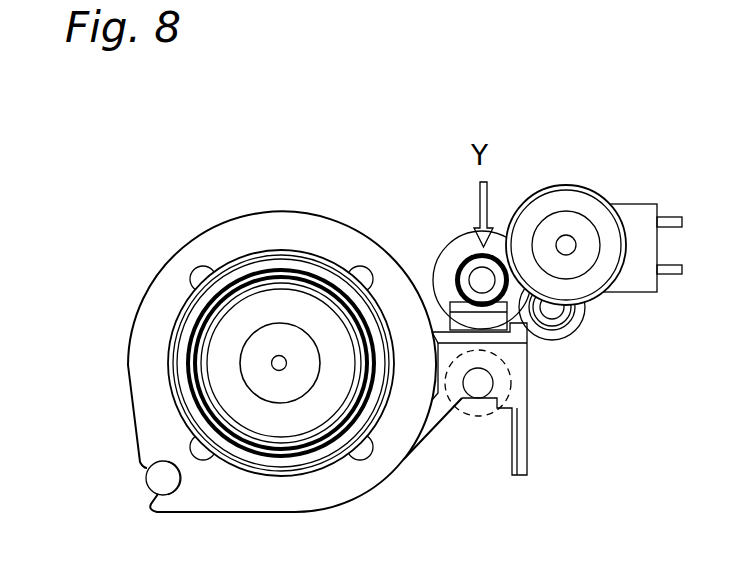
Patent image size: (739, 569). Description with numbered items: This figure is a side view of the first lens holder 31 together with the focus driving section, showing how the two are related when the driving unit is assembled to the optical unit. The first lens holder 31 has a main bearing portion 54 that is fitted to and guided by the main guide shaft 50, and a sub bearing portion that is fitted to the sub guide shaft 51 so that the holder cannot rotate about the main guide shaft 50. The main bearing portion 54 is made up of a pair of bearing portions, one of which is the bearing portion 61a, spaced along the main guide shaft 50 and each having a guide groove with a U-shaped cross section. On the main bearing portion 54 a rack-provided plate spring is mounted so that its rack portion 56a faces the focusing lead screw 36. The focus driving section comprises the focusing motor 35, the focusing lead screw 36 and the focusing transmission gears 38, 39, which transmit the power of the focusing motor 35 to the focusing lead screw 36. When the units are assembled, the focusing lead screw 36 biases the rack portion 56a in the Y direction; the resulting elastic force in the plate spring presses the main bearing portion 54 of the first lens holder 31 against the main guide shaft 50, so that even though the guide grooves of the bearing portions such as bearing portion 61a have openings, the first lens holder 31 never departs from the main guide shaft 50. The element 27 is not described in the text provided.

The first lens holder 31 is at (220, 223).
The rotary member 27 is at (217, 357).
The sub guide shaft 51 is at (155, 481).
The focusing transmission gear 39 is at (466, 238).
The focusing lead screw 36 is at (455, 263).
The focusing motor 35 is at (587, 190).
The focusing transmission gear 38 is at (583, 318).
The rack portion 56a is at (492, 327).
The main bearing portion 54 is at (527, 387).
The main guide shaft 50 is at (478, 388).
The bearing portion 61a is at (455, 413).